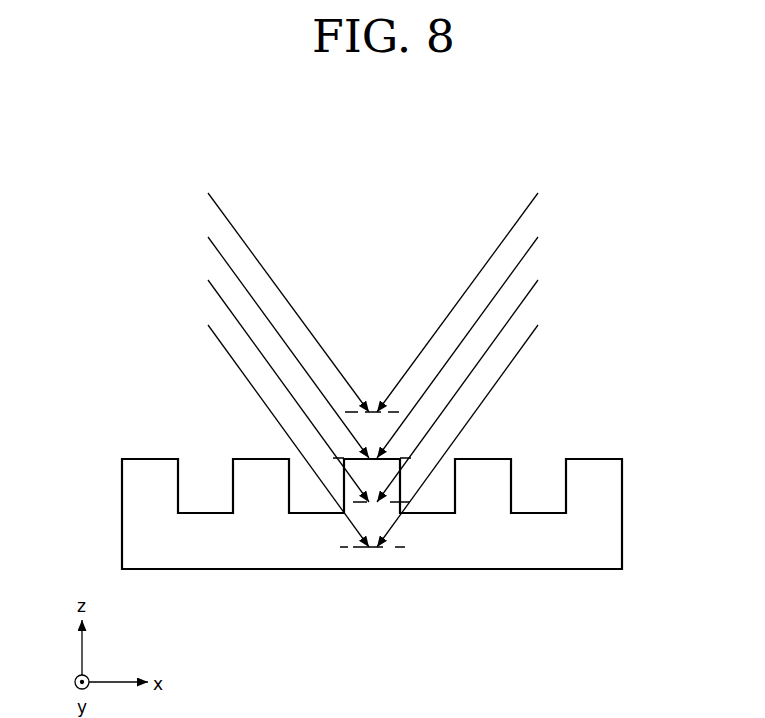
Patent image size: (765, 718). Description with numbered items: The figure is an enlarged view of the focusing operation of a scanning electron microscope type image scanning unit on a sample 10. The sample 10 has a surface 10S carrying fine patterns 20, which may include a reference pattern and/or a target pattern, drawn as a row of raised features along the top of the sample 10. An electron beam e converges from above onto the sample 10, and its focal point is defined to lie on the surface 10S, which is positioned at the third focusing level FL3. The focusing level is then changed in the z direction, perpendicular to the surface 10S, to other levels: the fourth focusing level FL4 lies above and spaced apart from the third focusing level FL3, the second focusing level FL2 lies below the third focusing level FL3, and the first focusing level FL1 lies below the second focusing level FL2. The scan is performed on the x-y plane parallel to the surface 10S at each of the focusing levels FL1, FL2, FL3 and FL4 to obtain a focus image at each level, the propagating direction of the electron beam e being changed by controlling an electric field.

The sample 10 is at (623, 511).
The surface of the sample 10S is at (598, 452).
The fine patterns 20 is at (110, 460).
The electron beam e is at (505, 236).
The first focusing level FL1 is at (342, 548).
The second focusing level FL2 is at (406, 500).
The third focusing level FL3 is at (343, 457).
The fourth focusing level FL4 is at (390, 411).